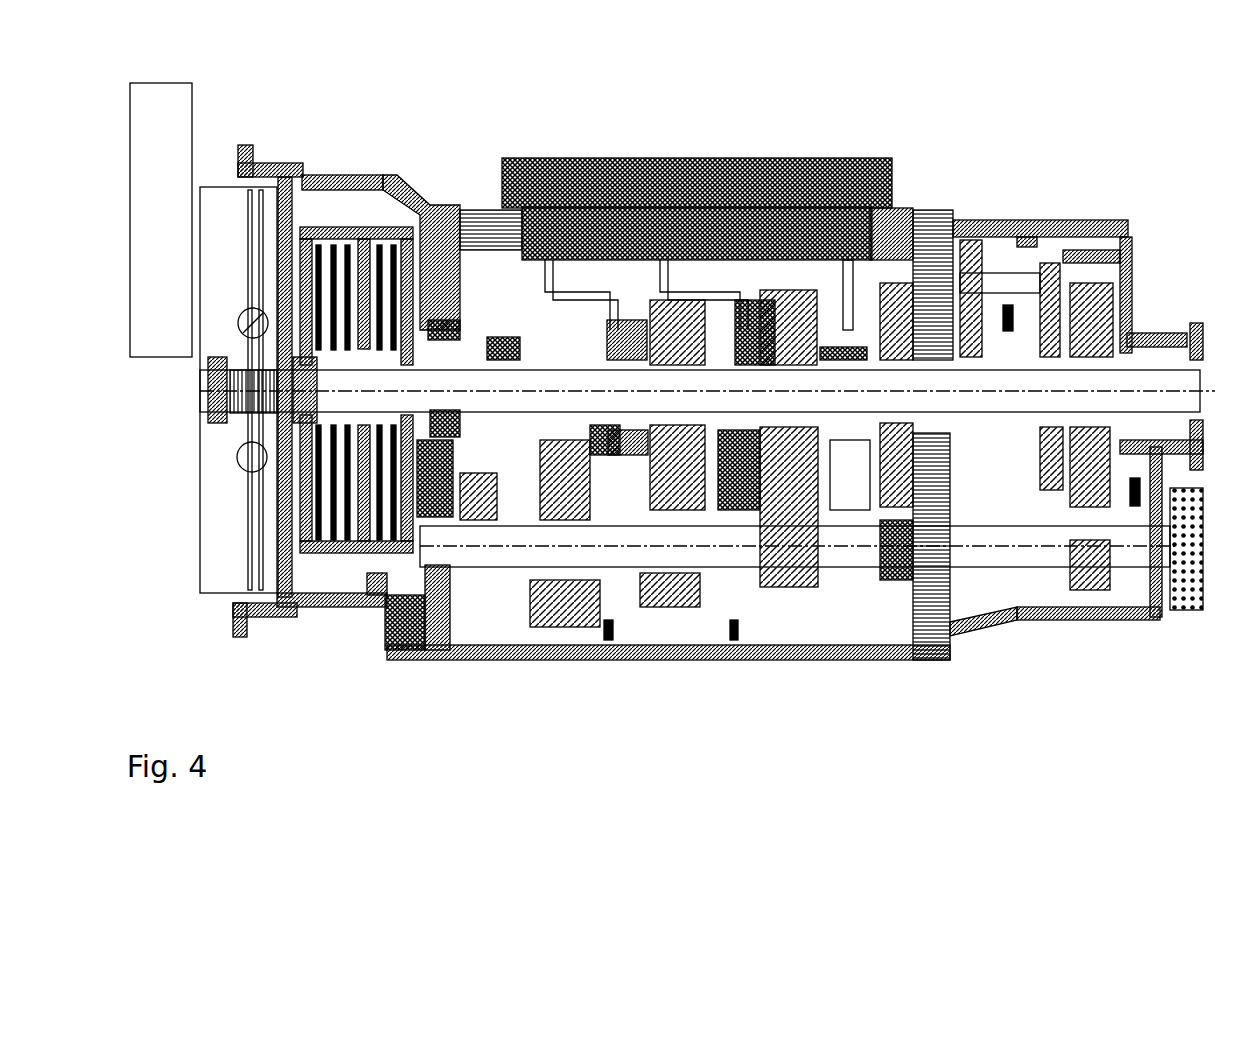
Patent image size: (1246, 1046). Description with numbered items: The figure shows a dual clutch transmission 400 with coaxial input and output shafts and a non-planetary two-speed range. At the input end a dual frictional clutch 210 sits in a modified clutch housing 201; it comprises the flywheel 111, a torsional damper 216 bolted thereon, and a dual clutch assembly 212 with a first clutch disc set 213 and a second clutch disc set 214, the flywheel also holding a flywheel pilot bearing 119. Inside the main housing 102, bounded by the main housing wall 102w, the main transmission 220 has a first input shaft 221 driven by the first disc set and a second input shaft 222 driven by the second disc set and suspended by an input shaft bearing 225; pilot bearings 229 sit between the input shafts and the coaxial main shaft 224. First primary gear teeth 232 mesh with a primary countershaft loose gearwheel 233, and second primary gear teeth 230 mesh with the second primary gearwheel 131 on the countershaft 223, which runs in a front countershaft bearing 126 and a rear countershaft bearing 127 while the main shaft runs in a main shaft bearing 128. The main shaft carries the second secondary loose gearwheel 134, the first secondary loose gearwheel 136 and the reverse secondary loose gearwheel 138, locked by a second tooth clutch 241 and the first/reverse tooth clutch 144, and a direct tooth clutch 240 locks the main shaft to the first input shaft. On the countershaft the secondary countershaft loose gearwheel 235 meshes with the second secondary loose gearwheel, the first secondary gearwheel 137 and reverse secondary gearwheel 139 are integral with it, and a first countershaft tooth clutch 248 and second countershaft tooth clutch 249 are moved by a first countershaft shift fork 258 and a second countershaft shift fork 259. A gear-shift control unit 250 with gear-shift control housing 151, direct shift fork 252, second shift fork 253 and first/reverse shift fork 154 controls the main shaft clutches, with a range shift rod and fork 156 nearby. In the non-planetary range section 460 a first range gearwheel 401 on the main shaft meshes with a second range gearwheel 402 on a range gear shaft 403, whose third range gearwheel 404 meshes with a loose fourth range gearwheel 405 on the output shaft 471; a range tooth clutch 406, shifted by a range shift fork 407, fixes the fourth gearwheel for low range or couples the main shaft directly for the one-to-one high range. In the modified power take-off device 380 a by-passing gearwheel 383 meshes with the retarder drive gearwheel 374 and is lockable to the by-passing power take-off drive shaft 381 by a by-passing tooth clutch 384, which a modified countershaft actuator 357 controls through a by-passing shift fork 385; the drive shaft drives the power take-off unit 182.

The dual clutch transmission 400 is at (318, 73).
The modified clutch housing 201 is at (440, 207).
The dual frictional clutch 210 is at (180, 115).
The flywheel 111 is at (208, 187).
The dual clutch assembly 212 is at (357, 224).
The second clutch disc set 214 is at (323, 347).
The first clutch disc set 213 is at (377, 340).
The torsional damper 216 is at (236, 323).
The flywheel pilot bearing 119 is at (205, 372).
The modified countershaft actuator 357 is at (383, 641).
The gear-shift control unit 250 is at (592, 56).
The gear-shift control housing 151 is at (632, 157).
The direct shift fork 252 is at (590, 280).
The second shift fork 253 is at (705, 282).
The first/reverse shift fork 154 is at (778, 158).
The range shift rod and fork 156 is at (832, 270).
The main housing 102 is at (890, 206).
The main housing wall 102w is at (922, 210).
The non-planetary range section 460 is at (970, 56).
The range shift fork 407 is at (1030, 240).
The fourth range gearwheel 405 is at (1105, 253).
The first range gearwheel 401 is at (970, 250).
The range tooth clutch 406 is at (1048, 268).
The third range gearwheel 404 is at (1092, 290).
The retarder drive gearwheel 374 is at (1135, 332).
The second range gearwheel 402 is at (1000, 320).
The range gear shaft 403 is at (1010, 303).
The output shaft 471 is at (1125, 383).
The main transmission 220 is at (177, 703).
The first input shaft 221 is at (345, 555).
The input shaft bearing 225 is at (405, 545).
The second input shaft 222 is at (355, 555).
The front countershaft bearing 126 is at (420, 600).
The second primary gear teeth 230 is at (437, 600).
The second primary gearwheel 131 is at (450, 600).
The pilot bearings 229 is at (472, 500).
The main shaft 224 is at (525, 560).
The primary countershaft loose gearwheel 233 is at (570, 628).
The first primary gear teeth 232 is at (582, 560).
The first countershaft tooth clutch 248 is at (615, 632).
The direct tooth clutch 240 is at (650, 605).
The secondary countershaft loose gearwheel 235 is at (690, 512).
The second secondary loose gearwheel 134 is at (700, 600).
The second countershaft tooth clutch 249 is at (745, 620).
The second tooth clutch 241 is at (778, 595).
The first secondary loose gearwheel 136 is at (815, 595).
The first secondary gearwheel 137 is at (885, 590).
The first/reverse tooth clutch 144 is at (852, 560).
The reverse secondary gearwheel 139 is at (905, 600).
The reverse secondary loose gearwheel 138 is at (920, 562).
The rear countershaft bearing 127 is at (955, 600).
The main shaft bearing 128 is at (1000, 600).
The countershaft 223 is at (1000, 625).
The second countershaft shift fork 259 is at (1000, 632).
The power take-off unit 182 is at (1185, 613).
The first countershaft shift fork 258 is at (1040, 662).
The modified power take-off device 380 is at (1085, 788).
The by-passing tooth clutch 384 is at (1138, 613).
The by-passing shift fork 385 is at (1146, 618).
The by-passing power take-off drive shaft 381 is at (1105, 610).
The by-passing gearwheel 383 is at (1158, 622).